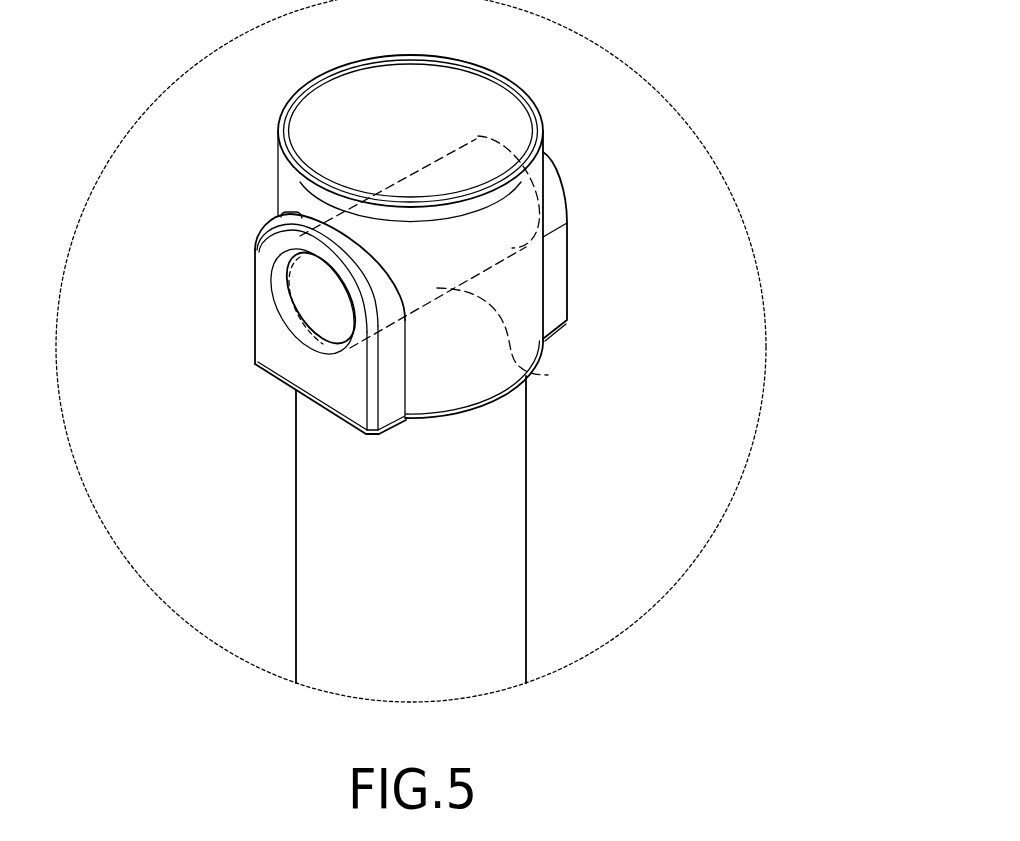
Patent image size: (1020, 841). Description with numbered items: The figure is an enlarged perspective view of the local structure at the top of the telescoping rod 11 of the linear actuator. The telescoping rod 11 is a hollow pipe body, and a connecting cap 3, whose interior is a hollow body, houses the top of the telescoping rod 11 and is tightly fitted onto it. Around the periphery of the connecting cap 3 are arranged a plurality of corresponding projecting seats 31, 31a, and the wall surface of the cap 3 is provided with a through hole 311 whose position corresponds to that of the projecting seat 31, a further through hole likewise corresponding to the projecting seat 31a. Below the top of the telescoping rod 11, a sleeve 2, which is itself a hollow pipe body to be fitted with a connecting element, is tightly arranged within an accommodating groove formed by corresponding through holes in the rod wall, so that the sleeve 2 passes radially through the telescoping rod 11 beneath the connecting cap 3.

The connecting cap 3 is at (572, 133).
The projecting seat 31 is at (265, 335).
The through hole 311 is at (287, 292).
The projecting seat 31a is at (558, 273).
The sleeve 2 is at (548, 375).
The telescoping rod 11 is at (510, 550).